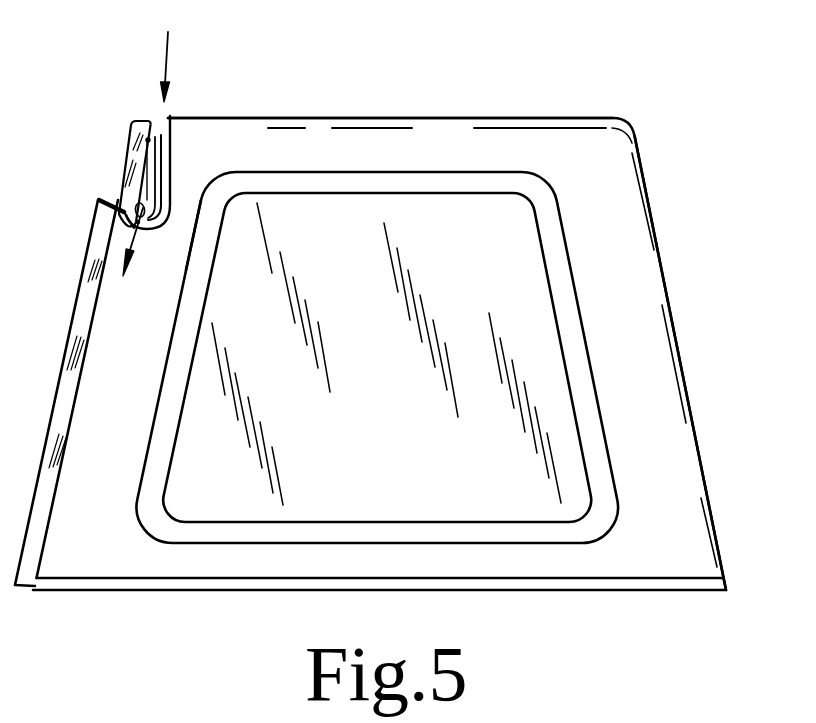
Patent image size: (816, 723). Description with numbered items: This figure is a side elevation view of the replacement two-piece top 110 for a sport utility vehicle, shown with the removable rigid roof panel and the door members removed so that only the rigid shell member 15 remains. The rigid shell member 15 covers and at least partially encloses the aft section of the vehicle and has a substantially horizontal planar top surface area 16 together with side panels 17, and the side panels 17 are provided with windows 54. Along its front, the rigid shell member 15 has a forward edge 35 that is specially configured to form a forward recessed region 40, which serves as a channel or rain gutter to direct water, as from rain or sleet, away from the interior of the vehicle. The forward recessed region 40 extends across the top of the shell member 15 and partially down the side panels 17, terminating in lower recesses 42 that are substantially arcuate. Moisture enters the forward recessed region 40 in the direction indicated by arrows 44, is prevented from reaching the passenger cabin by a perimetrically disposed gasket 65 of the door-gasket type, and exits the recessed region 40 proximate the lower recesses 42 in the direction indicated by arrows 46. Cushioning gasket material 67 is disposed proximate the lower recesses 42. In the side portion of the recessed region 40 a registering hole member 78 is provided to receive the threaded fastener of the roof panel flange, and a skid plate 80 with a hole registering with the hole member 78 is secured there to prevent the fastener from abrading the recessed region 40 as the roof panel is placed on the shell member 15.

The rigid shell member 15 is at (520, 108).
The top surface area 16 is at (442, 117).
The side panels 17 is at (634, 287).
The two-piece top 110 is at (385, 88).
The forward edge 35 is at (152, 127).
The forward recessed region 40 is at (168, 148).
The lower recesses 42 is at (163, 222).
The arrows 44 is at (173, 58).
The arrows 46 is at (163, 190).
The windows 54 is at (571, 264).
The gasket 65 is at (133, 167).
The gasket material 67 is at (110, 200).
The hole member 78 is at (147, 204).
The skid plate 80 is at (148, 168).